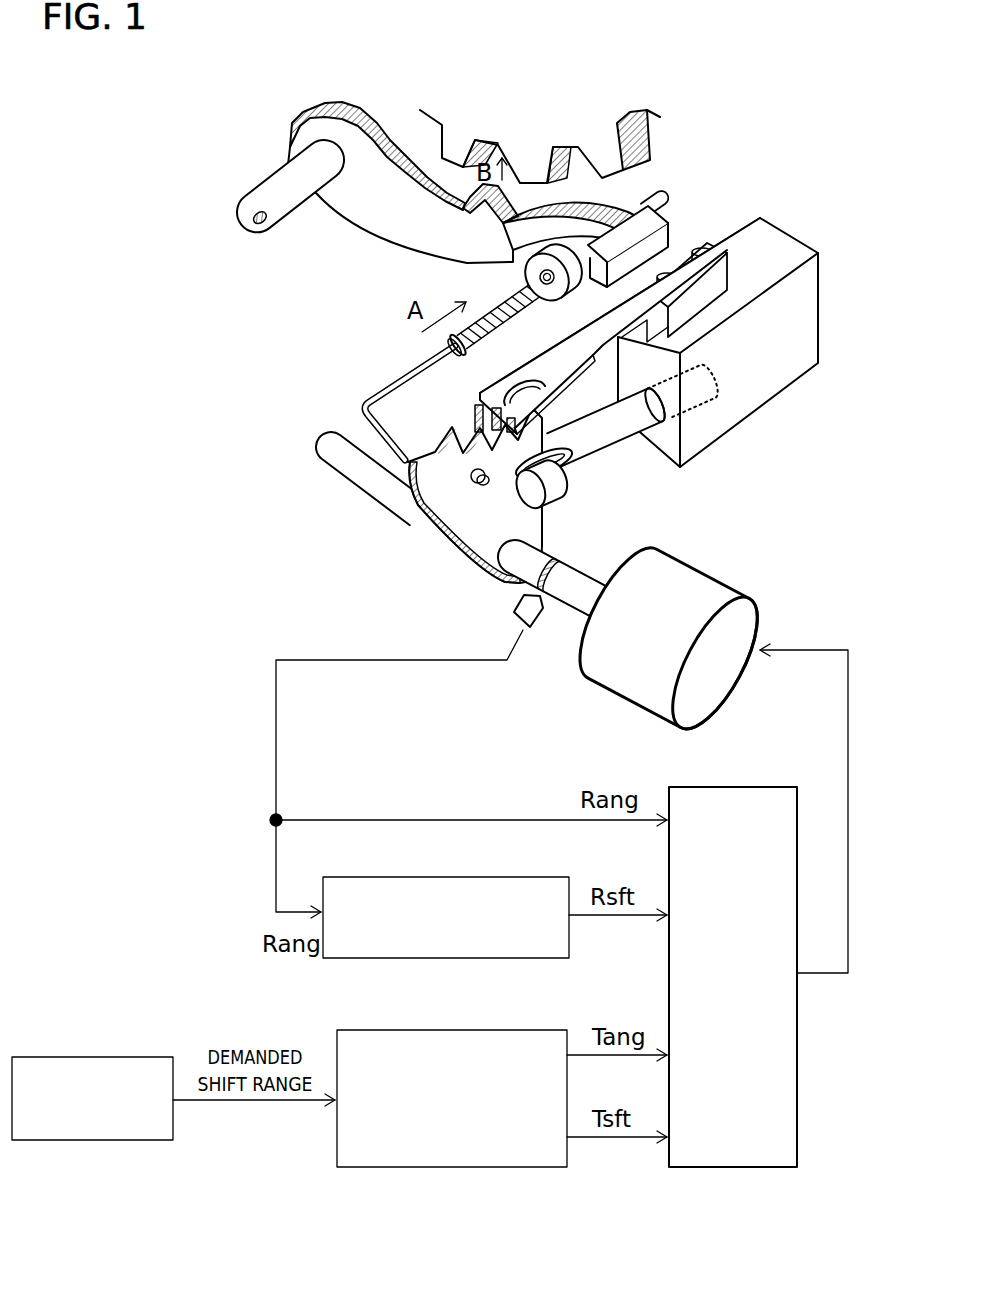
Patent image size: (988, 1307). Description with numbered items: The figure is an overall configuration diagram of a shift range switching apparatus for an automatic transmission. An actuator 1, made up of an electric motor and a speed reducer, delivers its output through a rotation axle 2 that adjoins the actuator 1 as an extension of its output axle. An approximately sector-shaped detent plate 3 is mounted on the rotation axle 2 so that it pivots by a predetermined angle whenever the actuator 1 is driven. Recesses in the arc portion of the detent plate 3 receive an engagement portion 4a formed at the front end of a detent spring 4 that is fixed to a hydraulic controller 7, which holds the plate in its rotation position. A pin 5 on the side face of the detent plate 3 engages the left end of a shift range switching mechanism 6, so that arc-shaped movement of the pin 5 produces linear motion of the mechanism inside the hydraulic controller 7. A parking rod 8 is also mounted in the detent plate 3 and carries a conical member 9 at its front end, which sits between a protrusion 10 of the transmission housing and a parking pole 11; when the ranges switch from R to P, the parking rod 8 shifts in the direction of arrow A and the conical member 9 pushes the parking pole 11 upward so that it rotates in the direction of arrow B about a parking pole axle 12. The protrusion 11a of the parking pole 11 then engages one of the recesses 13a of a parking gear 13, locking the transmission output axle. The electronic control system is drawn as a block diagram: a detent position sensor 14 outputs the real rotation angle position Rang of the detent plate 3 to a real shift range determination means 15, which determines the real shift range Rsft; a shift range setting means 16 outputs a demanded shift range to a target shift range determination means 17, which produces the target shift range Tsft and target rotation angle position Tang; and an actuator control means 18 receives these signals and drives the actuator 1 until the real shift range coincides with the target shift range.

The actuator 1 is at (668, 631).
The rotation axle 2 is at (562, 578).
The detent plate 3 is at (467, 497).
The detent spring 4 is at (620, 326).
The engagement portion 4a is at (473, 402).
The pin 5 is at (562, 479).
The shift range switching mechanism 6 is at (634, 425).
The hydraulic controller 7 is at (649, 346).
The parking rod 8 is at (399, 402).
The conical member 9 is at (517, 297).
The protrusion 10 is at (655, 238).
The parking pole 11 is at (479, 191).
The protrusion 11a is at (483, 208).
The parking pole axle 12 is at (279, 186).
The parking gear 13 is at (569, 125).
The recess 13a is at (500, 142).
The detent position sensor 14 is at (498, 609).
The real shift range determination means 15 is at (446, 900).
The shift range setting means 16 is at (92, 1069).
The target shift range determination means 17 is at (452, 1080).
The actuator control means 18 is at (723, 959).